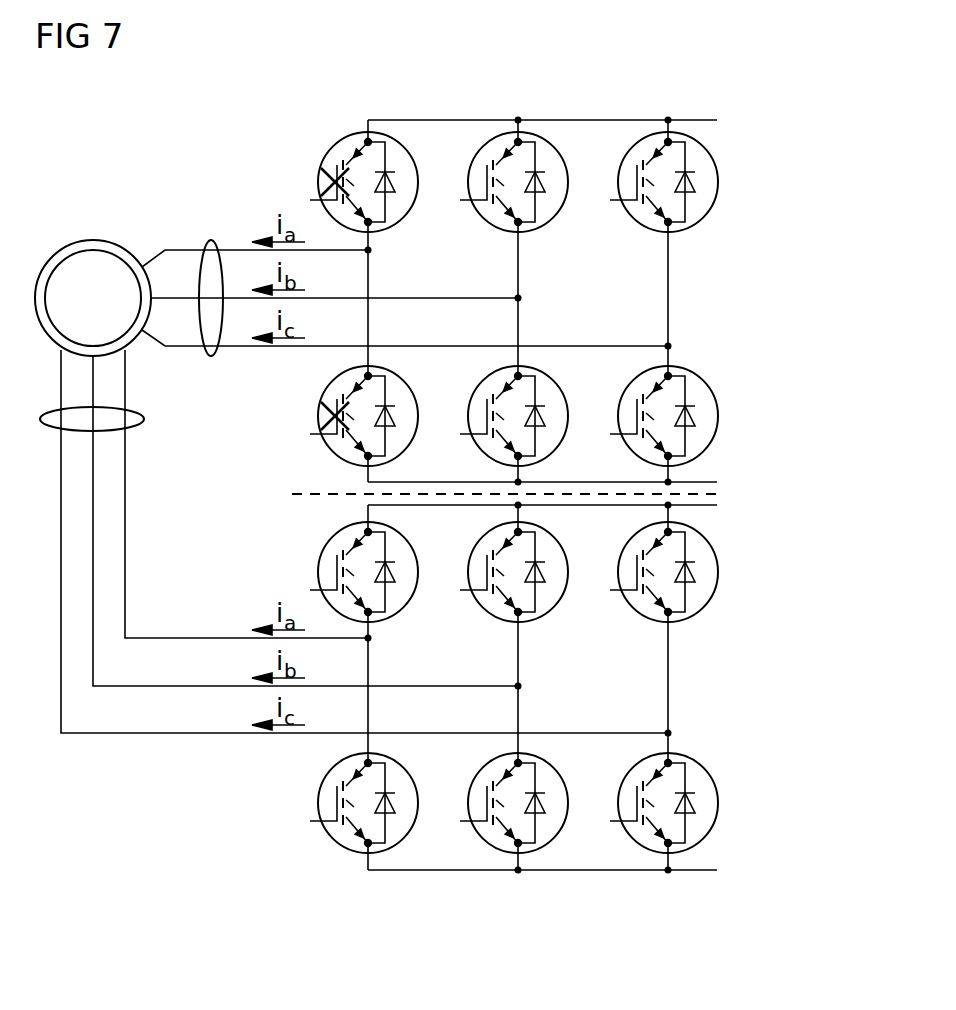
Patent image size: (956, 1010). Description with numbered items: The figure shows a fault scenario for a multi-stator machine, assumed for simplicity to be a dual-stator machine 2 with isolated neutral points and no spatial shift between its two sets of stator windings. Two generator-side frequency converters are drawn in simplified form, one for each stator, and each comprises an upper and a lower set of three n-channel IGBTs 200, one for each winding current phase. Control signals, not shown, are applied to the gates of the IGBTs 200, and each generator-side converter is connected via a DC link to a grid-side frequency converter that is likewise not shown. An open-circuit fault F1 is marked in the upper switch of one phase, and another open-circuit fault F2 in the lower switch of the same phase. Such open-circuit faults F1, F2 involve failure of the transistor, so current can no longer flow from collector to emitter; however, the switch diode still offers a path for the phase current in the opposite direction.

The dual-stator machine 2 is at (93, 240).
The n-channel IGBT 200 is at (548, 492).
The open-circuit fault in upper switch F1 is at (300, 136).
The open-circuit fault in lower switch F2 is at (300, 460).